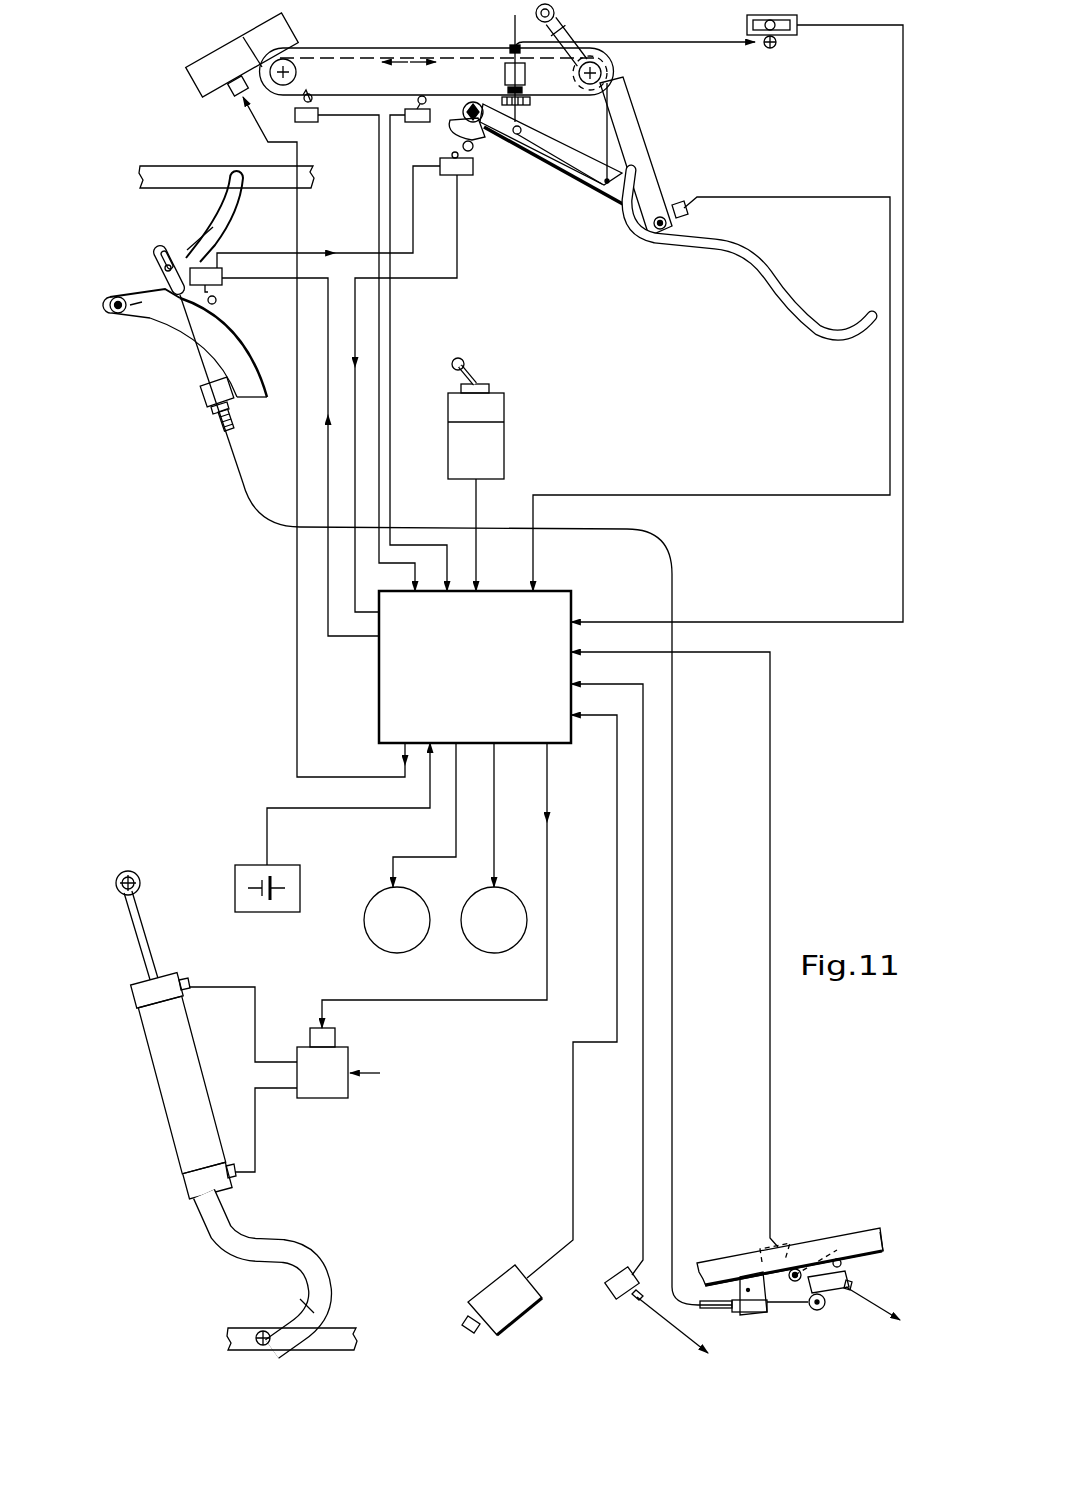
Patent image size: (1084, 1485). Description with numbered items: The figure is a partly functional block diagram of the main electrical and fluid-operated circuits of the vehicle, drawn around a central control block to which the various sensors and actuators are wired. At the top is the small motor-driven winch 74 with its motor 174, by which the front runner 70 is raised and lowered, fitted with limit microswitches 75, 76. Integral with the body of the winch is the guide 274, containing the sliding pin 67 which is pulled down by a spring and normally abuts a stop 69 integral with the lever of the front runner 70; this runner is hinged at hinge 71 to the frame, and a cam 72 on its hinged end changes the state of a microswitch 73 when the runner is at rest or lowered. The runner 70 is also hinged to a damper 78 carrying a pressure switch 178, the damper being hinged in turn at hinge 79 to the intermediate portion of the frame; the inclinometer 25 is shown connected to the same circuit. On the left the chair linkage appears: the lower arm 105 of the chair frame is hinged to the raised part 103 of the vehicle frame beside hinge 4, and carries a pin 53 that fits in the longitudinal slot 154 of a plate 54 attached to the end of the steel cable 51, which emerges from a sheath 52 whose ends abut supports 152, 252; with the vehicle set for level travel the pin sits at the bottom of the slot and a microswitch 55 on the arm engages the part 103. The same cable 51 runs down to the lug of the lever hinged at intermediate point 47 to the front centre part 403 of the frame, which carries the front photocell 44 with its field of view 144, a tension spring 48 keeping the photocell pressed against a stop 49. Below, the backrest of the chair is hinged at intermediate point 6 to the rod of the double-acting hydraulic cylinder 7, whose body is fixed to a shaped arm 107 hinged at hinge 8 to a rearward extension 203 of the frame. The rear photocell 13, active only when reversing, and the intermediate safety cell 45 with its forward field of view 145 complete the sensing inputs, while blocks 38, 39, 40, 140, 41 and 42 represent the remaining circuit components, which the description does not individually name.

The motor 174 is at (250, 37).
The small motor-driven winch 74 is at (350, 46).
The limit microswitch 75 is at (411, 108).
The guide 274 is at (516, 73).
The hinge 79 is at (556, 14).
The inclinometer 25 is at (745, 25).
The hinge 71 is at (476, 101).
The sliding pin 67 is at (520, 108).
The damper 78 is at (637, 118).
The pressure switch 178 is at (684, 205).
The front runner 70 is at (747, 280).
The stop 69 is at (523, 140).
The cam 72 is at (484, 135).
The microswitch 73 is at (463, 168).
The limit microswitch 76 is at (308, 122).
The lower arm 105 is at (223, 200).
The plate 54 is at (170, 250).
The longitudinal slot 154 is at (227, 240).
The pin 53 is at (160, 267).
The microswitch 55 is at (217, 273).
The hinge 4 is at (115, 311).
The raised part 103 is at (152, 313).
The steel cable 51 is at (197, 347).
The support 252 is at (218, 388).
The sheath 52 is at (232, 417).
The switch 42 is at (509, 431).
The controller 38 is at (475, 667).
The battery 39 is at (235, 867).
The indicator 40 is at (397, 920).
The indicator 140 is at (494, 920).
The valve 41 is at (322, 1063).
The intermediate point 6 is at (128, 871).
The double-acting hydraulic cylinder 7 is at (157, 1082).
The shaped arm 107 is at (300, 1253).
The rearward extension 203 is at (227, 1330).
The hinge 8 is at (262, 1330).
The rear photocell 13 is at (502, 1285).
The intermediate safety cell 45 is at (615, 1285).
The field of view 145 is at (662, 1318).
The tension spring 48 is at (757, 1277).
The intermediate point 47 is at (795, 1268).
The stop 49 is at (838, 1260).
The front centre part 403 is at (880, 1232).
The front photocell 44 is at (852, 1284).
The field of view 144 is at (884, 1310).
The support 152 is at (758, 1308).